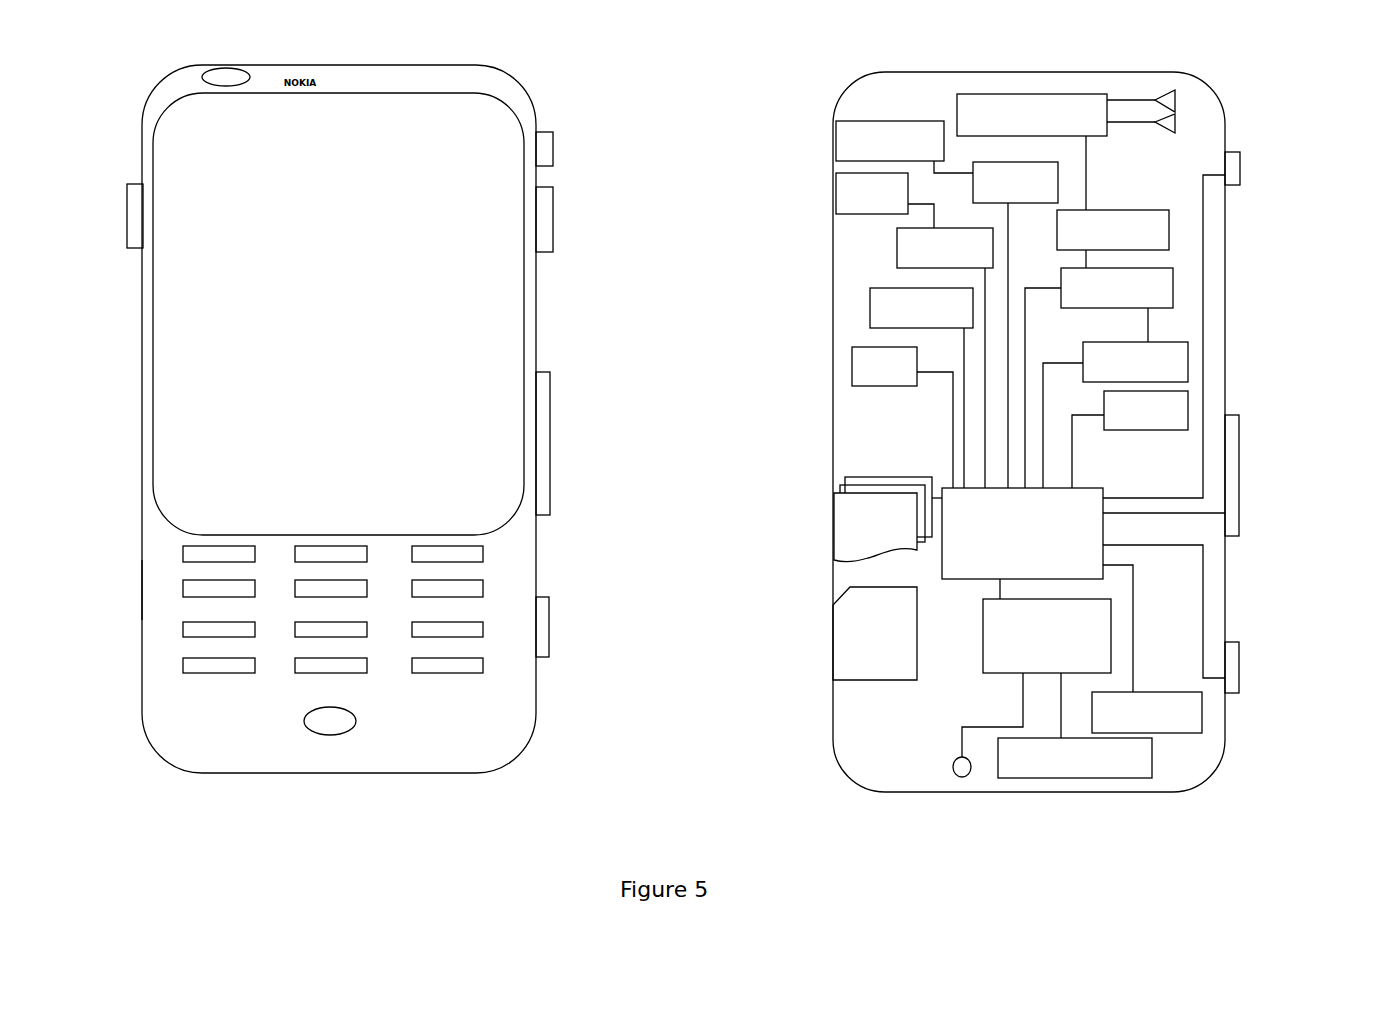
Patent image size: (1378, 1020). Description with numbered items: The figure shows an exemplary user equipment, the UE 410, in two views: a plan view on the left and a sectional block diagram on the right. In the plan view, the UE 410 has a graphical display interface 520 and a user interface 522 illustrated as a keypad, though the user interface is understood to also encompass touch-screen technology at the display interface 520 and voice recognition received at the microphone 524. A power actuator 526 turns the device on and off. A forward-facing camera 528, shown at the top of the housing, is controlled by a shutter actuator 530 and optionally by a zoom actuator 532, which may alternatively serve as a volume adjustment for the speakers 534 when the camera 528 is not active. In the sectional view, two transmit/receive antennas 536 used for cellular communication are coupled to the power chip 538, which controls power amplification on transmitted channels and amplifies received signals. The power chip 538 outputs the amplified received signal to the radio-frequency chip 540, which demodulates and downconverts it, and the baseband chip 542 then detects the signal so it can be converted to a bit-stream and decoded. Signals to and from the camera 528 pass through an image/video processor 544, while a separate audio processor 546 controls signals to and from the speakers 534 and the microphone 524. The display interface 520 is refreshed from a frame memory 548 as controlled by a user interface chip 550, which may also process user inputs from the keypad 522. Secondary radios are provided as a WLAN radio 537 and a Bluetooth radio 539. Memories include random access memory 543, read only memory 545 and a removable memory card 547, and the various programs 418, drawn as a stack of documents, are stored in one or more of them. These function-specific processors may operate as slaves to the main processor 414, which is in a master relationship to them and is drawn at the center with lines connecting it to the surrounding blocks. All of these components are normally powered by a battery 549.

The user equipment 410 is at (116, 96).
The main processor 414 is at (945, 488).
The programs 418 is at (847, 537).
The graphical display interface 520 is at (223, 288).
The user interface 522 is at (145, 588).
The microphone 524 is at (323, 730).
The power actuator 526 is at (553, 147).
The camera 528 is at (225, 65).
The shutter actuator 530 is at (548, 605).
The zoom actuator 532 is at (550, 395).
The speaker 534 is at (127, 175).
The transmit/receive antennas 536 is at (1170, 90).
The WLAN radio 537 is at (870, 305).
The power chip 538 is at (1003, 94).
The Bluetooth radio 539 is at (852, 370).
The radio-frequency chip 540 is at (1169, 218).
The baseband chip 542 is at (1173, 280).
The random access memory 543 is at (1188, 352).
The image/video processor 544 is at (1058, 203).
The read only memory 545 is at (1188, 403).
The audio processor 546 is at (897, 248).
The memory card 547 is at (852, 612).
The frame memory 548 is at (1072, 778).
The battery 549 is at (1185, 733).
The user interface chip 550 is at (983, 637).